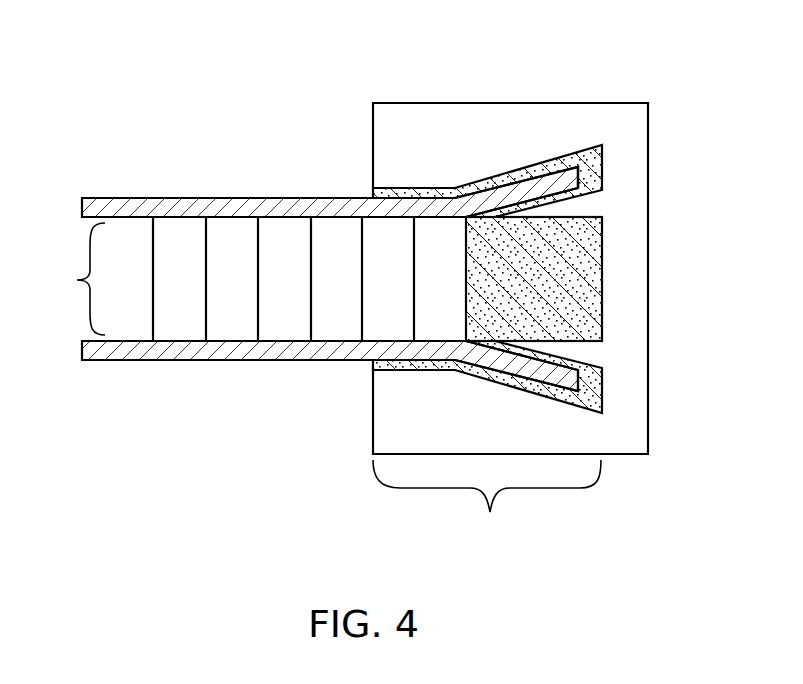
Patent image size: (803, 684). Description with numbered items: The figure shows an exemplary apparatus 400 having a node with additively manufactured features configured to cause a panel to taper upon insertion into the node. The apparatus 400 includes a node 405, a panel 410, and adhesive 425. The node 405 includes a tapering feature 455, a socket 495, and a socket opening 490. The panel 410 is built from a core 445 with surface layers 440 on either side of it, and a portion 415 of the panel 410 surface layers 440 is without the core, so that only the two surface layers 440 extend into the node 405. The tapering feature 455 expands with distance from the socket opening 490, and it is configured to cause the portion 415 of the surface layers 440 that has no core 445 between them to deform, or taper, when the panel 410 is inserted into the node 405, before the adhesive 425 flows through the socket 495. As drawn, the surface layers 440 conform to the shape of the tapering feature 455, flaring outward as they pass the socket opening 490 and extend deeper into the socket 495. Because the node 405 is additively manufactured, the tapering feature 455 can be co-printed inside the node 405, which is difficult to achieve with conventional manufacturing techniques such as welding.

The apparatus 400 is at (183, 135).
The node 405 is at (412, 127).
The panel 410 is at (257, 307).
The portion of panel surface layers without the core 415 is at (584, 306).
The adhesive 425 is at (567, 247).
The surface layers 440 is at (122, 208).
The core 445 is at (64, 279).
The tapering feature 455 is at (572, 163).
The socket opening 490 is at (368, 191).
The socket 495 is at (487, 503).